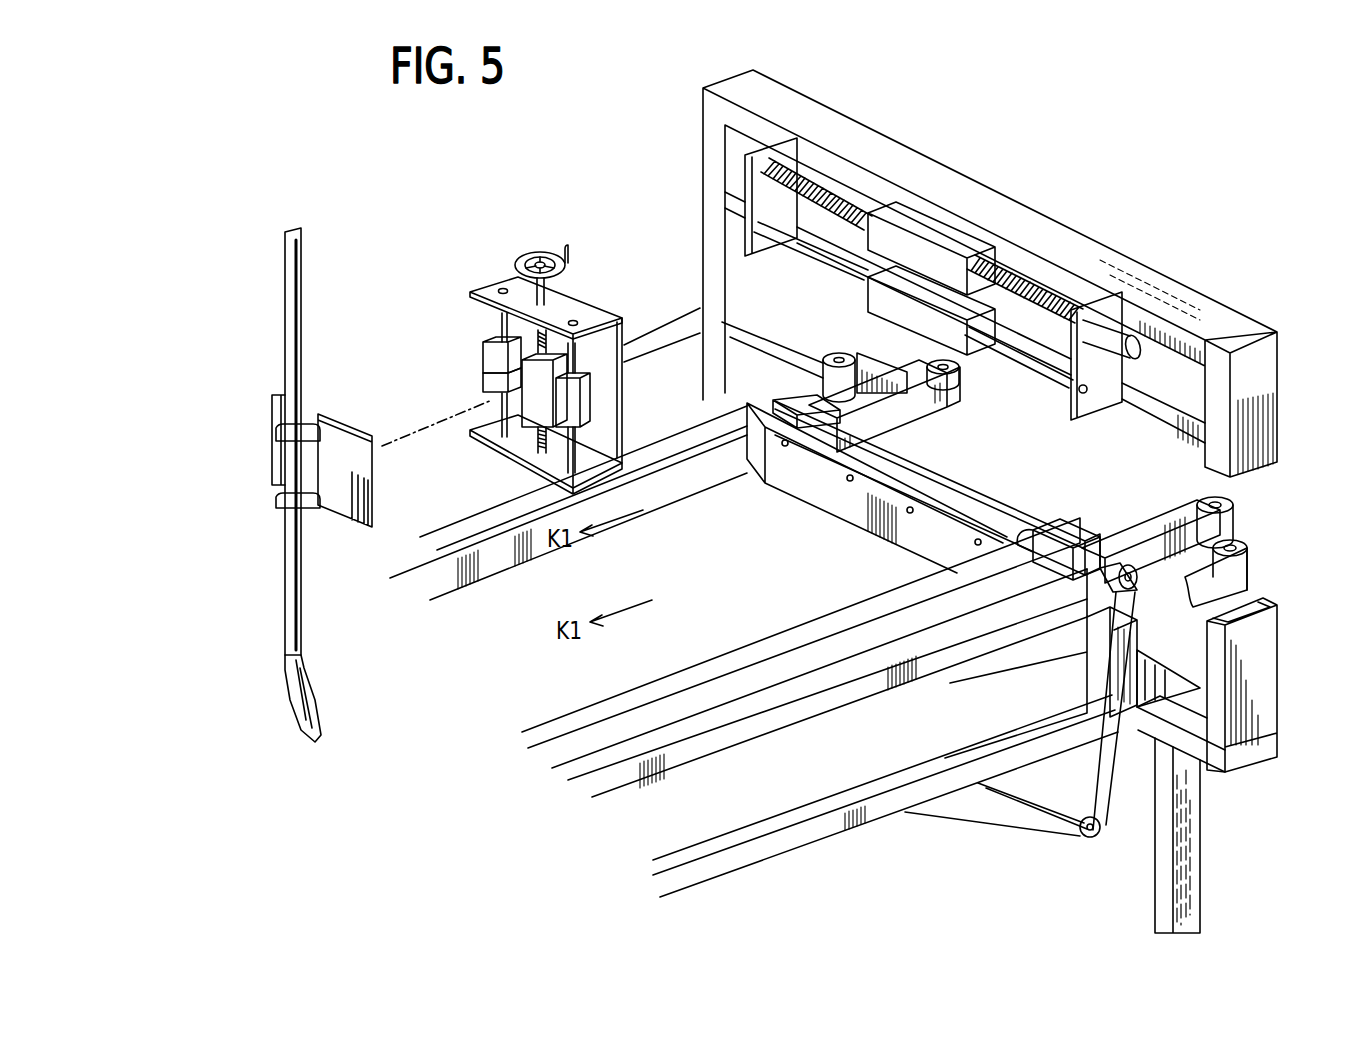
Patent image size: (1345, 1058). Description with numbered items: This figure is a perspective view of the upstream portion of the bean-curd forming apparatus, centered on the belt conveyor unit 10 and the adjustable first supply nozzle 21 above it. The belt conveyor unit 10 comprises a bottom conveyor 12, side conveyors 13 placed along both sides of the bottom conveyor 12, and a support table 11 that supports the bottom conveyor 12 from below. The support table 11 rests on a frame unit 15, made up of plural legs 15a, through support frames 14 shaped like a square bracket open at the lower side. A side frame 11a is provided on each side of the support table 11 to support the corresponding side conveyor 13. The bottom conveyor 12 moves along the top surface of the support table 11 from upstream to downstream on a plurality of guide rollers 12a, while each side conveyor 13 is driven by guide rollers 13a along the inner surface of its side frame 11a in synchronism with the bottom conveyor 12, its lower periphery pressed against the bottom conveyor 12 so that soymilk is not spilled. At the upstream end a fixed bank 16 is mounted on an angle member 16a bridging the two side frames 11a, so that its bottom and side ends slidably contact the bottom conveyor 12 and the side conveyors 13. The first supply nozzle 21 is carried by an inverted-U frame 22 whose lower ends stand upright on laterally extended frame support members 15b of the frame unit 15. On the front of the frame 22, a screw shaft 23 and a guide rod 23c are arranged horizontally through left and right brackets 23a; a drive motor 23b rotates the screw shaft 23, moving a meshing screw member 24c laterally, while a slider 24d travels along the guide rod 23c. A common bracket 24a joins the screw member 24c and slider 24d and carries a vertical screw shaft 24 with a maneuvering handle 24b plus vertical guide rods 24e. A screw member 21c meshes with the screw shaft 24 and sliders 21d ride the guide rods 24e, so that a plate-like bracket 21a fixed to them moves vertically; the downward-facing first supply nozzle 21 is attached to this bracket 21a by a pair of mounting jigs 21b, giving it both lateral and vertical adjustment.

The belt conveyor unit 10 is at (857, 643).
The support table 11 is at (770, 725).
The side frame 11a is at (690, 445).
The bottom conveyor 12 is at (972, 500).
The guide roller 12a is at (1140, 573).
The side conveyor 13 is at (920, 415).
The guide roller 13a is at (959, 368).
The support frame 14 is at (1072, 632).
The frame unit 15 is at (787, 843).
The leg 15a is at (1190, 883).
The frame support member 15b is at (1212, 762).
The fixed bank 16 is at (832, 502).
The angle member 16a is at (1018, 542).
The first supply nozzle 21 is at (286, 600).
The bracket 21a is at (345, 440).
The mounting jig 21b is at (278, 434).
The screw member 21c is at (500, 368).
The slider 21d is at (525, 382).
The frame 22 is at (897, 152).
The screw shaft 23 is at (1009, 268).
The bracket 23a is at (757, 242).
The drive motor 23b is at (1133, 358).
The guide rod 23c is at (858, 290).
The screw shaft 24 is at (540, 440).
The bracket 24a is at (573, 308).
The maneuvering handle 24b is at (540, 250).
The screw member 24c is at (940, 223).
The slider 24d is at (974, 300).
The guide rod 24e is at (502, 327).